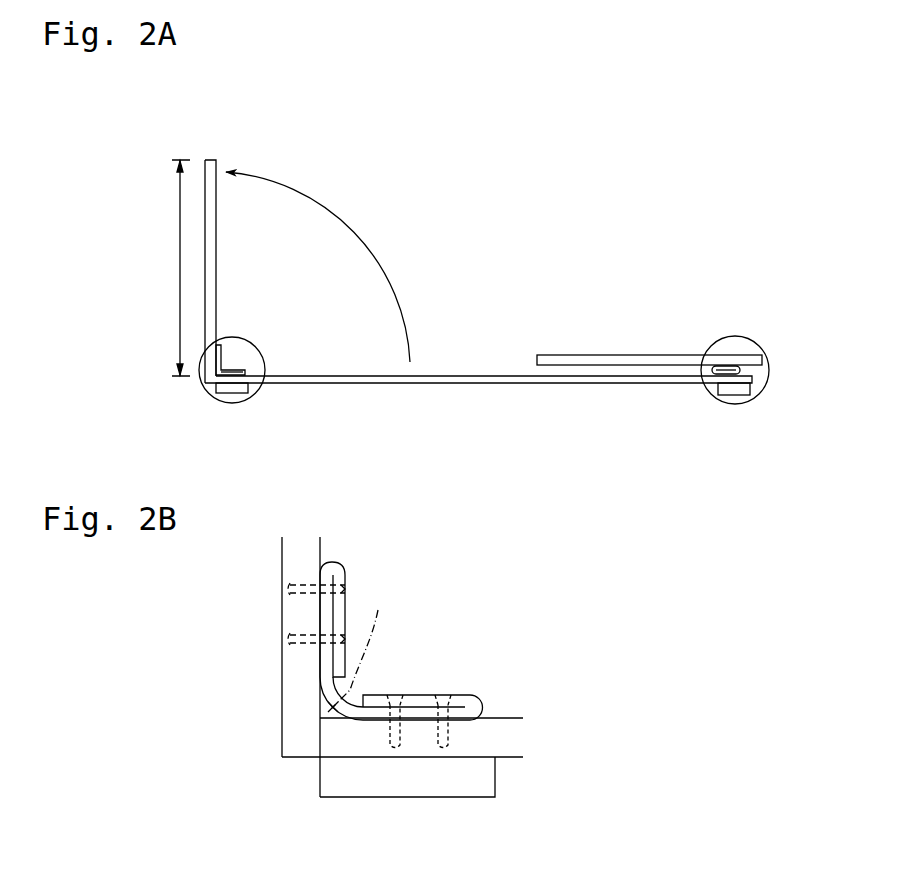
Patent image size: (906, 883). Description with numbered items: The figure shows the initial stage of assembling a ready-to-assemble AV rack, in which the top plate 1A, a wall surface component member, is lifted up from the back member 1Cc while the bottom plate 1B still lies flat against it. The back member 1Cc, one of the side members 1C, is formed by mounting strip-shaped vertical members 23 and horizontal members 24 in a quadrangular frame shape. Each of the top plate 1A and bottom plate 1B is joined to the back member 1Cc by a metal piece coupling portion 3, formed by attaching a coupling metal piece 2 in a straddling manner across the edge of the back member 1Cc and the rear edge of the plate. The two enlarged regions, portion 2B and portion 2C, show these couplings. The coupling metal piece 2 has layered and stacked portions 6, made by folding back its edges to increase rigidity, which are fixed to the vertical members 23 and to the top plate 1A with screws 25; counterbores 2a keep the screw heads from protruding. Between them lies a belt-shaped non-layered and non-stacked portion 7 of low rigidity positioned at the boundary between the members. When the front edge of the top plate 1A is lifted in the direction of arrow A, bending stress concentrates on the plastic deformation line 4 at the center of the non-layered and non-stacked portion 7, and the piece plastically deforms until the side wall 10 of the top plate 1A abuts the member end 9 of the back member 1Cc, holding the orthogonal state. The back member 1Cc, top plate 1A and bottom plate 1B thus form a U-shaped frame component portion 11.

In FIG. 2A, the top plate 1A is at (210, 160).
In FIG. 2B, the top plate 1A is at (285, 552).
In FIG. 2A, the bottom plate 1B is at (595, 357).
In FIG. 2B, the side members 1C is at (439, 805).
In FIG. 2A, the back member 1Cc is at (478, 415).
In FIG. 2A, the frame component portion 11 is at (474, 149).
In FIG. 2A, the arrow A is at (291, 268).
In FIG. 2A, the metal piece coupling portion 3 is at (247, 363).
In FIG. 2B, the metal piece coupling portion 3 is at (416, 599).
In FIG. 2A, the horizontal members 24 is at (237, 396).
In FIG. 2B, the horizontal members 24 is at (467, 790).
In FIG. 2A, the vertical members 23 is at (474, 378).
In FIG. 2B, the vertical members 23 is at (508, 760).
In FIG. 2A, the portion 2B is at (205, 393).
In FIG. 2A, the portion 2C is at (763, 387).
In FIG. 2B, the coupling metal piece 2 is at (423, 700).
In FIG. 2B, the counterbore 2a is at (348, 590).
In FIG. 2B, the plastic deformation line 4 is at (358, 649).
In FIG. 2B, the layered and stacked portion 6 is at (325, 613).
In FIG. 2B, the non-layered and non-stacked portion 7 is at (328, 688).
In FIG. 2B, the member end 9 is at (322, 745).
In FIG. 2B, the side wall 10 is at (322, 738).
In FIG. 2B, the screws 25 is at (290, 588).